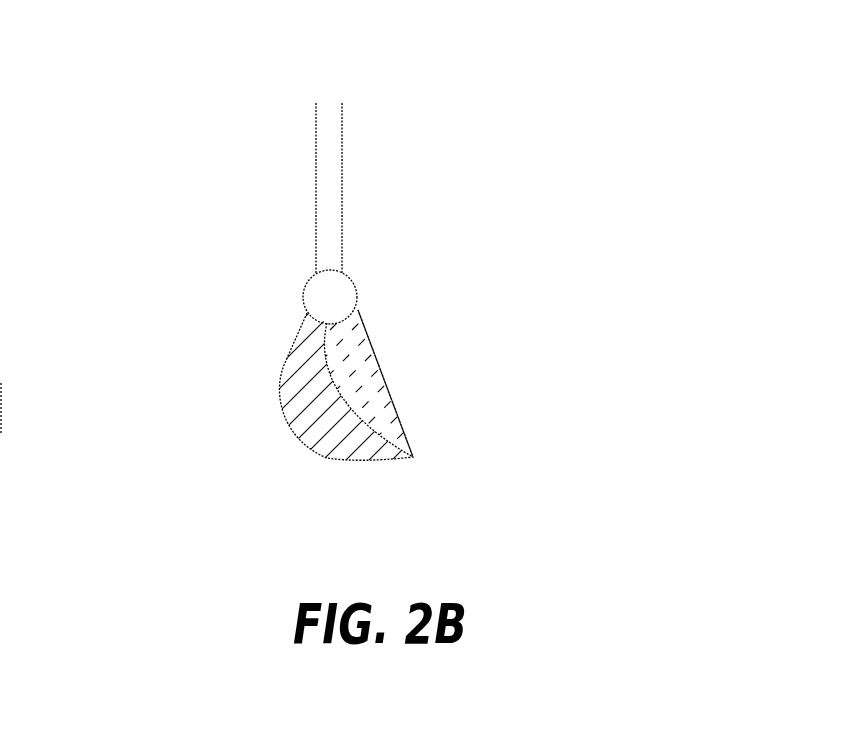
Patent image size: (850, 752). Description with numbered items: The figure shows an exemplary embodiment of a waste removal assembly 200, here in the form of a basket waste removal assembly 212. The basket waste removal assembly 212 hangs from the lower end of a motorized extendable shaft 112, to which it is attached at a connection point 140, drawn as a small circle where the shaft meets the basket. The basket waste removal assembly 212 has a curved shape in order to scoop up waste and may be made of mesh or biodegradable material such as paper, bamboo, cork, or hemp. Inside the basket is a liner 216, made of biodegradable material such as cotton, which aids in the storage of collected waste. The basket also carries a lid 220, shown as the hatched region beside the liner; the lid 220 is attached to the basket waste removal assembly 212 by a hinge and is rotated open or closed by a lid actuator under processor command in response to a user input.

The waste removal assembly 200 is at (137, 35).
The motorized extendable shaft 112 is at (330, 167).
The connection point 140 is at (343, 296).
The basket waste removal assembly 212 is at (278, 388).
The lid 220 is at (370, 389).
The liner 216 is at (394, 407).